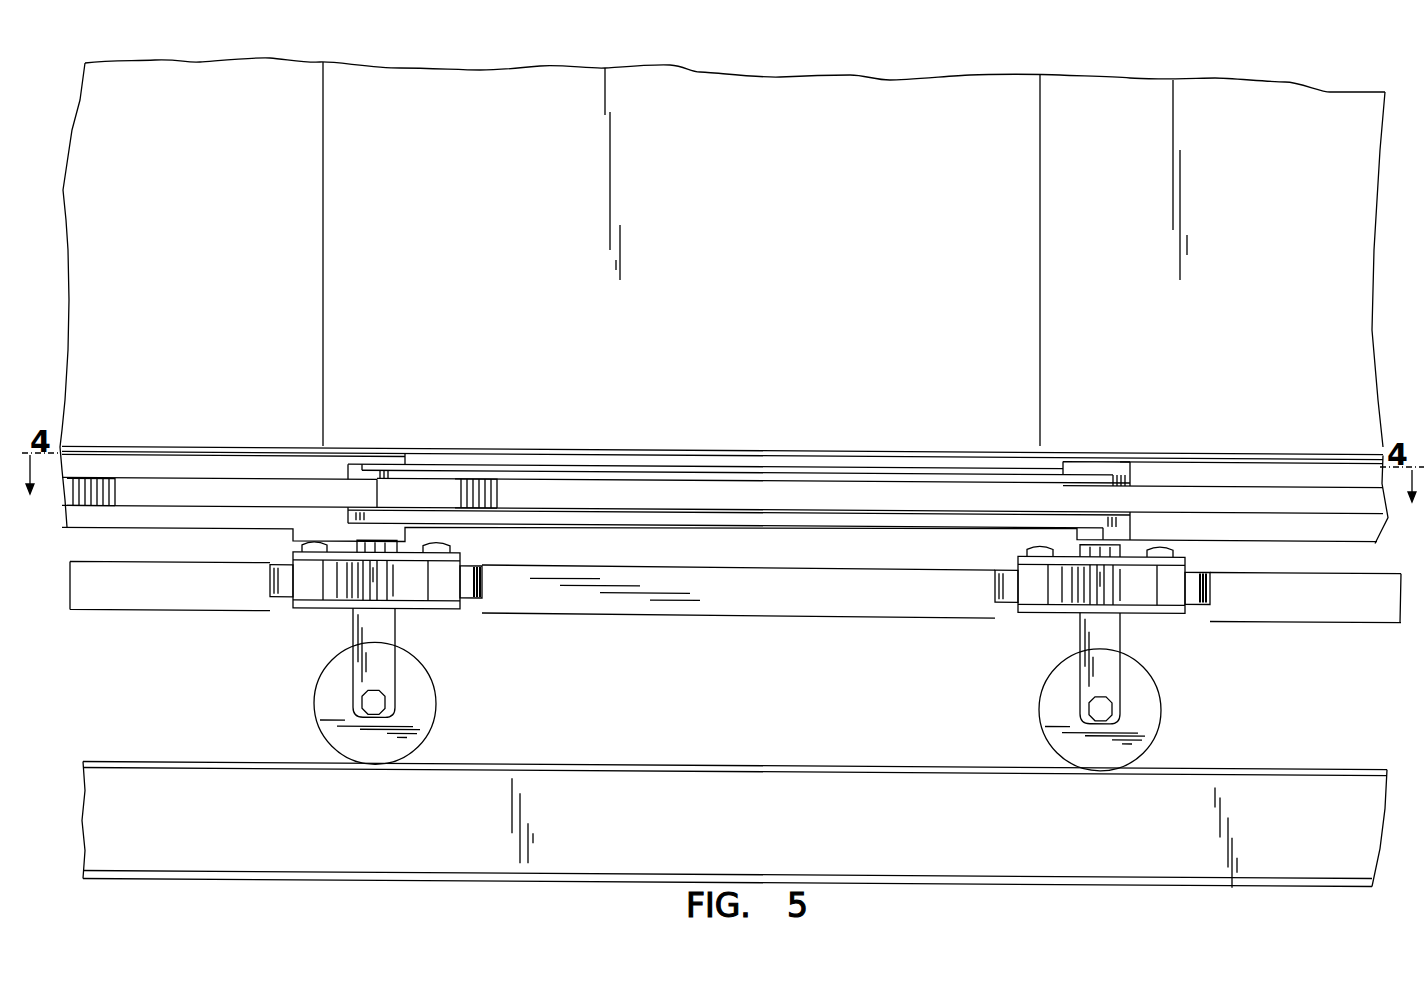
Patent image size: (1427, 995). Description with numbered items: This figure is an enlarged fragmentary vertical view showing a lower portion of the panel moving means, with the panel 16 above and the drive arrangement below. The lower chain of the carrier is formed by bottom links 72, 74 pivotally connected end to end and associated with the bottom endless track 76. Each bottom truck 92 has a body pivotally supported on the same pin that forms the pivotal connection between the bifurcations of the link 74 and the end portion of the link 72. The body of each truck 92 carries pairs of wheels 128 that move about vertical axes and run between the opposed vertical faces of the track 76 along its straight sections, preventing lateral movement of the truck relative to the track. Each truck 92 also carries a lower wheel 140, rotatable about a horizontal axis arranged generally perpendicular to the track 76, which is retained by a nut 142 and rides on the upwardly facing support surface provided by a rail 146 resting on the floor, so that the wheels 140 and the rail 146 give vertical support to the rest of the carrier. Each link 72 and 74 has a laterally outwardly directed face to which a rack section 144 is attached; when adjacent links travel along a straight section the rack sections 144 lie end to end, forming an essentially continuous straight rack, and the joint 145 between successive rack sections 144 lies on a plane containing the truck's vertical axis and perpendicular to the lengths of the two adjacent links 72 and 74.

The roof panel 16 is at (245, 70).
The bottom link 72 is at (710, 512).
The bottom link 74 is at (1299, 524).
The bottom endless track 76 is at (750, 595).
The bottom truck 92 is at (428, 601).
The wheel 128 is at (272, 589).
The lower wheel 140 is at (413, 720).
The axle nut 142 is at (375, 700).
The rack section 144 is at (180, 486).
The joint 145 is at (372, 491).
The rail 146 is at (890, 770).